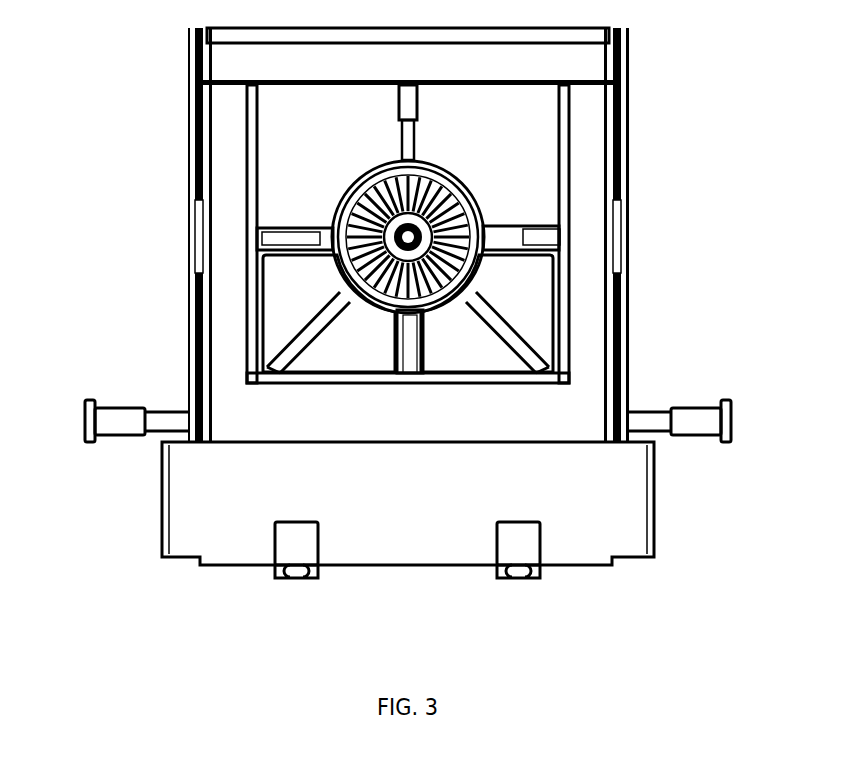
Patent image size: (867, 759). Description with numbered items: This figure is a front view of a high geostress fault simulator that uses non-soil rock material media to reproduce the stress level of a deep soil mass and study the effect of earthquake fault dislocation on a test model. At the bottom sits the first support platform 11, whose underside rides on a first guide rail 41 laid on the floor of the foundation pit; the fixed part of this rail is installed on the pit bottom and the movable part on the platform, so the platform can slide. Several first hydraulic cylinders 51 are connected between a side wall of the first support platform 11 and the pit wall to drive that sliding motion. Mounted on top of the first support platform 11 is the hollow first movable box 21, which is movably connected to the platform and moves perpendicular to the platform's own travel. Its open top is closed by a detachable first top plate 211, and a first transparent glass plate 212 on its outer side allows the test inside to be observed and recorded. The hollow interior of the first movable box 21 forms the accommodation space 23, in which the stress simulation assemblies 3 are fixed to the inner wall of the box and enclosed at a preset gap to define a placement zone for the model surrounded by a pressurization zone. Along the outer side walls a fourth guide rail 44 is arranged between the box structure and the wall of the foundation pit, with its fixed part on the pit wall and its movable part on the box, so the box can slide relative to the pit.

The stress simulation assembly 3 is at (492, 225).
The first support platform 11 is at (620, 503).
The first movable box 21 is at (319, 205).
The first top plate 211 is at (243, 66).
The first transparent glass plate 212 is at (243, 168).
The accommodation space 23 is at (503, 127).
The first guide rail 41 is at (508, 578).
The fourth guide rail 44 is at (632, 317).
The first hydraulic cylinder 51 is at (525, 542).